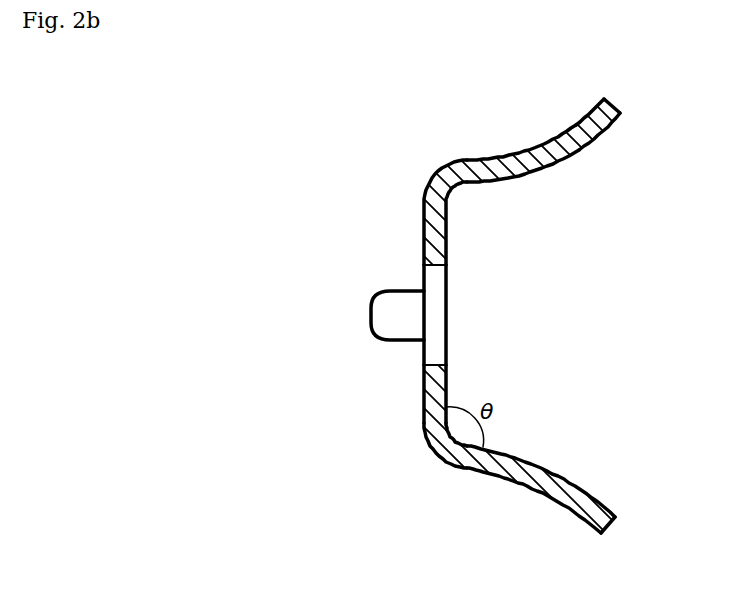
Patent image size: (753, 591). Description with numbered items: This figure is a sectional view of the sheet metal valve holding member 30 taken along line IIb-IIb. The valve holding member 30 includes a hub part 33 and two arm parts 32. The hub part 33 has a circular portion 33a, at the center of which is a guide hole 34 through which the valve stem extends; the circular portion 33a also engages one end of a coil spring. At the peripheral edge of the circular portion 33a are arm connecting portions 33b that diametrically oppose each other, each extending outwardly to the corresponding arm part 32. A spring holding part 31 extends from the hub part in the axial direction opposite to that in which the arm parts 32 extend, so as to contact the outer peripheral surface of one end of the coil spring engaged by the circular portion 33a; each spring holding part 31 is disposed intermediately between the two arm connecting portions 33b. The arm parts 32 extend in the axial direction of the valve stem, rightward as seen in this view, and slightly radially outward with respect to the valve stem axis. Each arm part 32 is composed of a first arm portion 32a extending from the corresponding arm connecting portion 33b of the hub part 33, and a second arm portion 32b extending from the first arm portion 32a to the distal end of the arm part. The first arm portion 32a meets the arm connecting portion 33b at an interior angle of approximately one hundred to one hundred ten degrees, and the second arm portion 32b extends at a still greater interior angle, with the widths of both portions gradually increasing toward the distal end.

The valve holding member 30 is at (434, 157).
The spring holding part 31 is at (400, 290).
The arm part 32 is at (501, 462).
The first arm portion 32a is at (503, 159).
The second arm portion 32b is at (580, 132).
The hub part 33 is at (427, 430).
The circular portion 33a is at (426, 380).
The arm connecting portion 33b is at (425, 224).
The guide hole 34 is at (434, 338).